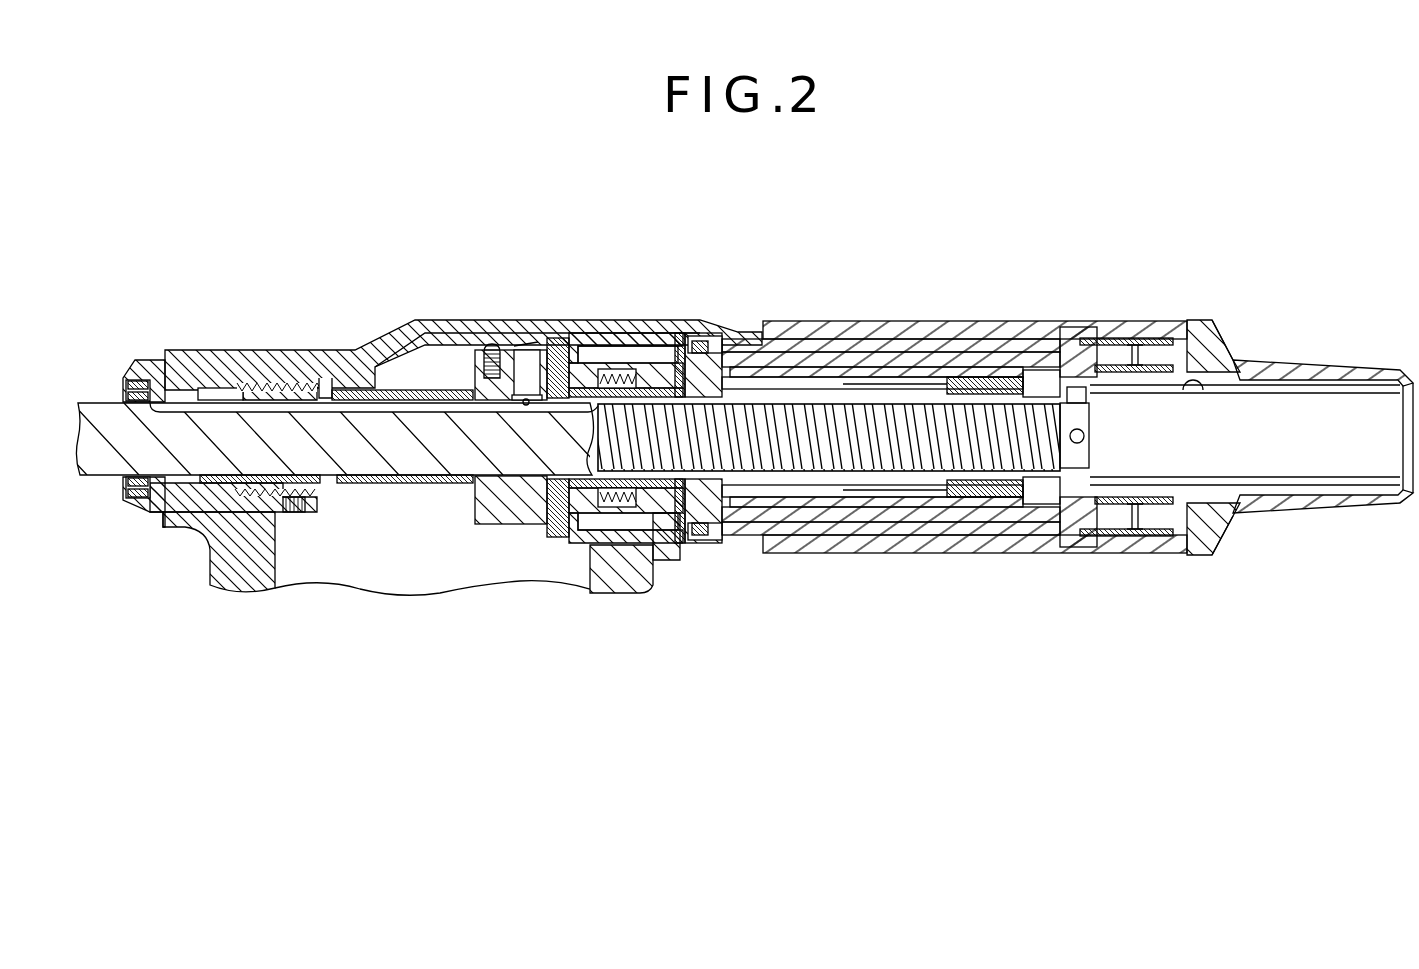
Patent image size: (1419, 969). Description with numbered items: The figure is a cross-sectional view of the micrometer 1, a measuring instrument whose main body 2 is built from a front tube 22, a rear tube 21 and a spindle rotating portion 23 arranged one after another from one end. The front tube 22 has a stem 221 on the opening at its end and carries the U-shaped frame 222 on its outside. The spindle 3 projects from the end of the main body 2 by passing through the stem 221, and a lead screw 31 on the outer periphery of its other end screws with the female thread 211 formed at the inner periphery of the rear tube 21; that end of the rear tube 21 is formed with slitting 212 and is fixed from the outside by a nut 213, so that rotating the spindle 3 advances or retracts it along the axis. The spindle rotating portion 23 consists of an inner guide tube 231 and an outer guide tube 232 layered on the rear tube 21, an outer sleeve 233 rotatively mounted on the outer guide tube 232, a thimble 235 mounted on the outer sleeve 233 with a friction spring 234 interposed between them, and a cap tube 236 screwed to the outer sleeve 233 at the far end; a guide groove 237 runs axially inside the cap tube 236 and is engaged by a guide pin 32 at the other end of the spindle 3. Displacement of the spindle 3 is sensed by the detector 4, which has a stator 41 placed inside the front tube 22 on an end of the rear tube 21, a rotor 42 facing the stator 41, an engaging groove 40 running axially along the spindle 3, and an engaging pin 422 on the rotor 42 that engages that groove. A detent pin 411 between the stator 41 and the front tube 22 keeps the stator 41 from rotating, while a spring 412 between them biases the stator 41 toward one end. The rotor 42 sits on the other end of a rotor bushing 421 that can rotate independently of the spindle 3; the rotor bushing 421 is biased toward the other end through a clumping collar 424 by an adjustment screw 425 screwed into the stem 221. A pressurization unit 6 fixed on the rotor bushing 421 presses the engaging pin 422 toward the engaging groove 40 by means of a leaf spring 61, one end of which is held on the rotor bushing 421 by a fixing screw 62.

The micrometer 1 is at (998, 146).
The main body 2 is at (744, 227).
The spindle 3 is at (105, 418).
The detector 4 is at (663, 212).
The pressurization unit 6 is at (530, 258).
The rear tube 21 is at (815, 478).
The front tube 22 is at (363, 352).
The spindle rotating portion 23 is at (1122, 235).
The lead screw 31 is at (820, 408).
The guide pin 32 is at (1068, 395).
The engaging groove 40 is at (413, 415).
The stator 41 is at (605, 345).
The rotor 42 is at (572, 338).
The leaf spring 61 is at (526, 358).
The fixing screw 62 is at (488, 348).
The female thread 211 is at (955, 392).
The slitting 212 is at (920, 393).
The nut 213 is at (990, 393).
The stem 221 is at (153, 385).
The U-shaped frame 222 is at (240, 565).
The inner guide tube 231 is at (860, 492).
The outer guide tube 232 is at (903, 515).
The outer sleeve 233 is at (983, 515).
The friction spring 234 is at (1035, 525).
The thimble 235 is at (1082, 532).
The cap tube 236 is at (1208, 528).
The guide groove 237 is at (1230, 362).
The detent pin 411 is at (670, 338).
The spring 412 is at (620, 372).
The rotor bushing 421 is at (520, 515).
The engaging pin 422 is at (556, 345).
The clumping collar 424 is at (425, 480).
The adjustment screw 425 is at (333, 497).